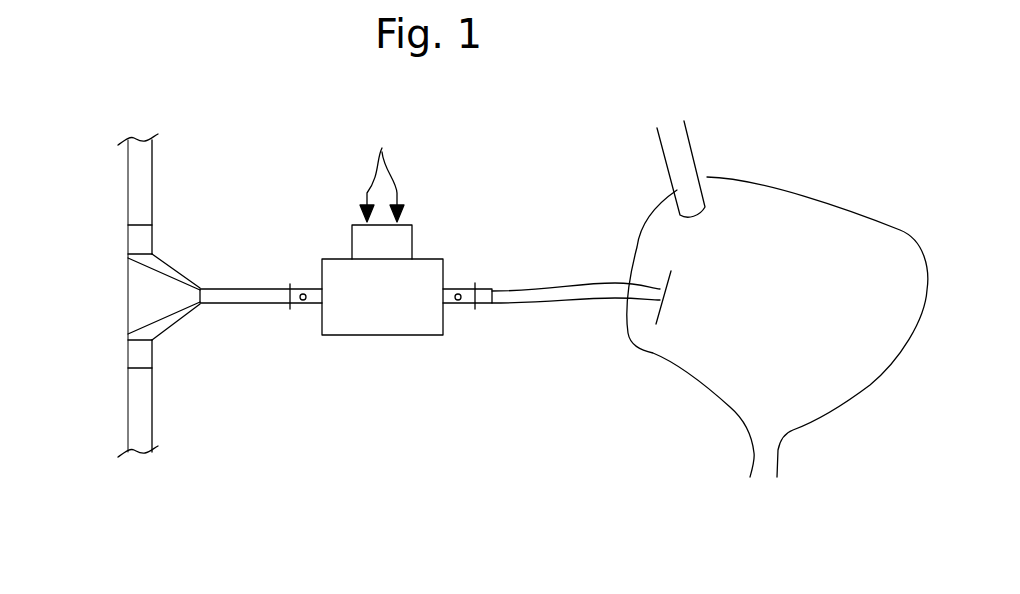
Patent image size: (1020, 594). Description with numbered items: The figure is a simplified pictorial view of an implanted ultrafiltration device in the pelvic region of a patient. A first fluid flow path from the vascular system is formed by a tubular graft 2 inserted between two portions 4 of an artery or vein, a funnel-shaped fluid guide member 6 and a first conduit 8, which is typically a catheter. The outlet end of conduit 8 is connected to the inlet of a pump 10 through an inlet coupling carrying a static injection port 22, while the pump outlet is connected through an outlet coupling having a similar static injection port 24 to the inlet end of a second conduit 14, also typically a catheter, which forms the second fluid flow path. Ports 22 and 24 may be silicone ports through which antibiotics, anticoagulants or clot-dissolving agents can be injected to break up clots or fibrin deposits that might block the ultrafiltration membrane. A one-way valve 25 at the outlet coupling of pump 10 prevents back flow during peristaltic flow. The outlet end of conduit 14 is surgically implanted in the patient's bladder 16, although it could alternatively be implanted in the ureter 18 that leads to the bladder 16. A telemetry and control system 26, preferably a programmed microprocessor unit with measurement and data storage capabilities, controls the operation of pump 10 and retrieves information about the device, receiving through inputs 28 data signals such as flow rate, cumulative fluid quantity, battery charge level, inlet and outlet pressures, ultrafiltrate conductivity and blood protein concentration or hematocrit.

The tubular graft 2 is at (128, 254).
The portions of an artery and/or vein 4 is at (135, 180).
The funnel-shaped fluid guide member 6 is at (172, 278).
The first conduit 8 is at (262, 304).
The pump 10 is at (387, 320).
The second conduit 14 is at (563, 301).
The bladder 16 is at (698, 372).
The ureter 18 is at (694, 142).
The static injection port 22 is at (303, 293).
The static injection port 24 is at (458, 302).
The one-way valve 25 is at (488, 288).
The telemetry and control system 26 is at (352, 232).
The inputs 28 is at (390, 175).